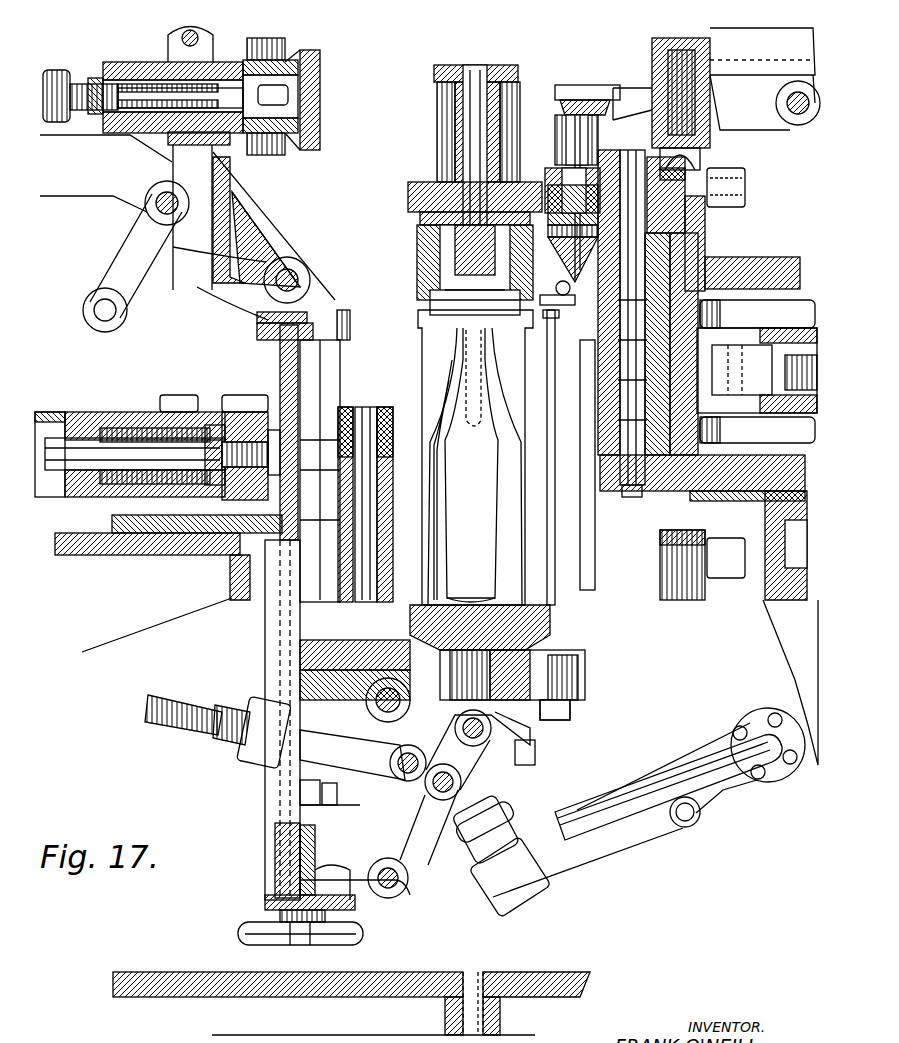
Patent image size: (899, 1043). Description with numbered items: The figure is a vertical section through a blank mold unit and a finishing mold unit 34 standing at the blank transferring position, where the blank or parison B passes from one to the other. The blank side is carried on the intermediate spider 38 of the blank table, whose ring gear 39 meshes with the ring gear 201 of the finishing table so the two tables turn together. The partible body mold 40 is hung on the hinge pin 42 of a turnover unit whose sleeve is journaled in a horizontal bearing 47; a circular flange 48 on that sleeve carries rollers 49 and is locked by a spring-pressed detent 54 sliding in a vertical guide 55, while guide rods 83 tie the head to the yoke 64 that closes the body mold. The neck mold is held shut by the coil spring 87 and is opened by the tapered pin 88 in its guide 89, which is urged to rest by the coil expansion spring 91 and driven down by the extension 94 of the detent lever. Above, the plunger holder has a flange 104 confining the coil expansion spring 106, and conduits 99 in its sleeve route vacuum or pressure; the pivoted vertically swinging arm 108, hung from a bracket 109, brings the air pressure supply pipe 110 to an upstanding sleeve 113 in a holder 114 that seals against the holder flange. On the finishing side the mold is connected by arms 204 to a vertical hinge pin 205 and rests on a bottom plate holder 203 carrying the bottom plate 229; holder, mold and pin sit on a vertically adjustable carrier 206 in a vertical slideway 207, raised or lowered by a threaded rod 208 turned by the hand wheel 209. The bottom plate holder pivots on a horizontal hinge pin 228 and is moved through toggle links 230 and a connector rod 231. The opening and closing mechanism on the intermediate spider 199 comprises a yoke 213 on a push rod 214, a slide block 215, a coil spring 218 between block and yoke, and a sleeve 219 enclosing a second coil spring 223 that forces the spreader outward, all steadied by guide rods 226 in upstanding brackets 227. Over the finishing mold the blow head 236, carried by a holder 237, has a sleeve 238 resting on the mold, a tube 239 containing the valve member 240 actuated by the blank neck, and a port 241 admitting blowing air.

The tube 239 is at (148, 62).
The valve member 240 is at (214, 104).
The port 241 is at (243, 60).
The blow head 236 is at (283, 40).
The sleeve 238 is at (320, 60).
The holder 237 is at (260, 223).
The flange 104 is at (498, 75).
The coil expansion spring 106 is at (440, 112).
The conduits 99 is at (440, 238).
The extension 94 is at (580, 92).
The coil expansion spring 91 is at (556, 132).
The guide 89 is at (532, 185).
The tapered pin 88 is at (560, 252).
The coil spring 87 is at (568, 293).
The vertical guide 55 is at (652, 50).
The detent 54 is at (700, 158).
The rollers 49 is at (745, 186).
The circular flange 48 is at (700, 238).
The horizontal bearing 47 is at (790, 258).
The guide rods 83 is at (790, 310).
The yoke 64 is at (765, 388).
The hinge pin 42 is at (640, 497).
The partible body mold 40 is at (640, 560).
The intermediate spider 38 is at (782, 552).
The finishing mold units 34 is at (418, 372).
The blank or parison B is at (471, 465).
The vertical hinge pin 205 is at (368, 406).
The arms 204 is at (388, 406).
The upstanding brackets 227 is at (280, 385).
The guide rods 226 is at (93, 408).
The slide block 215 is at (55, 425).
The sleeve 219 is at (135, 420).
The push rod 214 is at (70, 485).
The coil spring 223 is at (150, 482).
The coil spring 218 is at (168, 486).
The yoke 213 is at (255, 490).
The intermediate spider 199 is at (135, 555).
The bottom plate 229 is at (548, 618).
The bottom plate holder 203 is at (560, 650).
The threaded rod 208 is at (275, 640).
The connector rod 231 is at (232, 740).
The horizontal hinge pin 228 is at (363, 755).
The toggle links 230 is at (470, 770).
The vertically adjustable carrier 206 is at (292, 790).
The vertical slideway 207 is at (275, 855).
The hand wheel 209 is at (238, 935).
The upstanding sleeve 113 is at (518, 820).
The air pressure supply pipe 110 is at (605, 805).
The pivoted vertically swinging arm 108 is at (680, 758).
The bracket 109 is at (790, 652).
The holder 114 is at (495, 903).
The ring gear 201 is at (455, 975).
The ring gear 39 is at (520, 962).